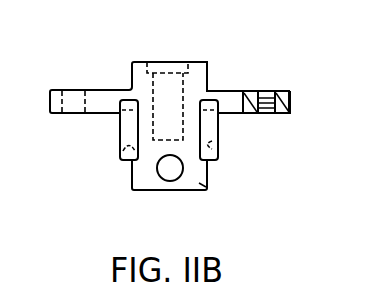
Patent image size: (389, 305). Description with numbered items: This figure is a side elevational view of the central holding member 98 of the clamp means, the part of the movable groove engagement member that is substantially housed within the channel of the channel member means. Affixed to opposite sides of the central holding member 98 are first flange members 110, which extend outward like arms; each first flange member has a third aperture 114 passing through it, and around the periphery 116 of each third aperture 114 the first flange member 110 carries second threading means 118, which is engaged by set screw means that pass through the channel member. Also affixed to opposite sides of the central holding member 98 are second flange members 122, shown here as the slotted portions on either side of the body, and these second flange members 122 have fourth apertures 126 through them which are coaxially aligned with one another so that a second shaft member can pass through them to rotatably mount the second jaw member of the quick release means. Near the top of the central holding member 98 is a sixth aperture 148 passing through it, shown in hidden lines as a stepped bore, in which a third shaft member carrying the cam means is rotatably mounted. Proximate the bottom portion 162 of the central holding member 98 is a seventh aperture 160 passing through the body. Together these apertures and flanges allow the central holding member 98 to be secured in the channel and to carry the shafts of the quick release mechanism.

The central holding member 98 is at (172, 88).
The first flange members 110 is at (103, 94).
The third aperture 114 is at (260, 97).
The periphery 116 is at (281, 115).
The second threading means 118 is at (275, 91).
The second flange members 122 is at (118, 142).
The fourth apertures 126 is at (130, 108).
The sixth aperture 148 is at (158, 68).
The seventh aperture 160 is at (172, 172).
The bottom portion 162 is at (204, 188).